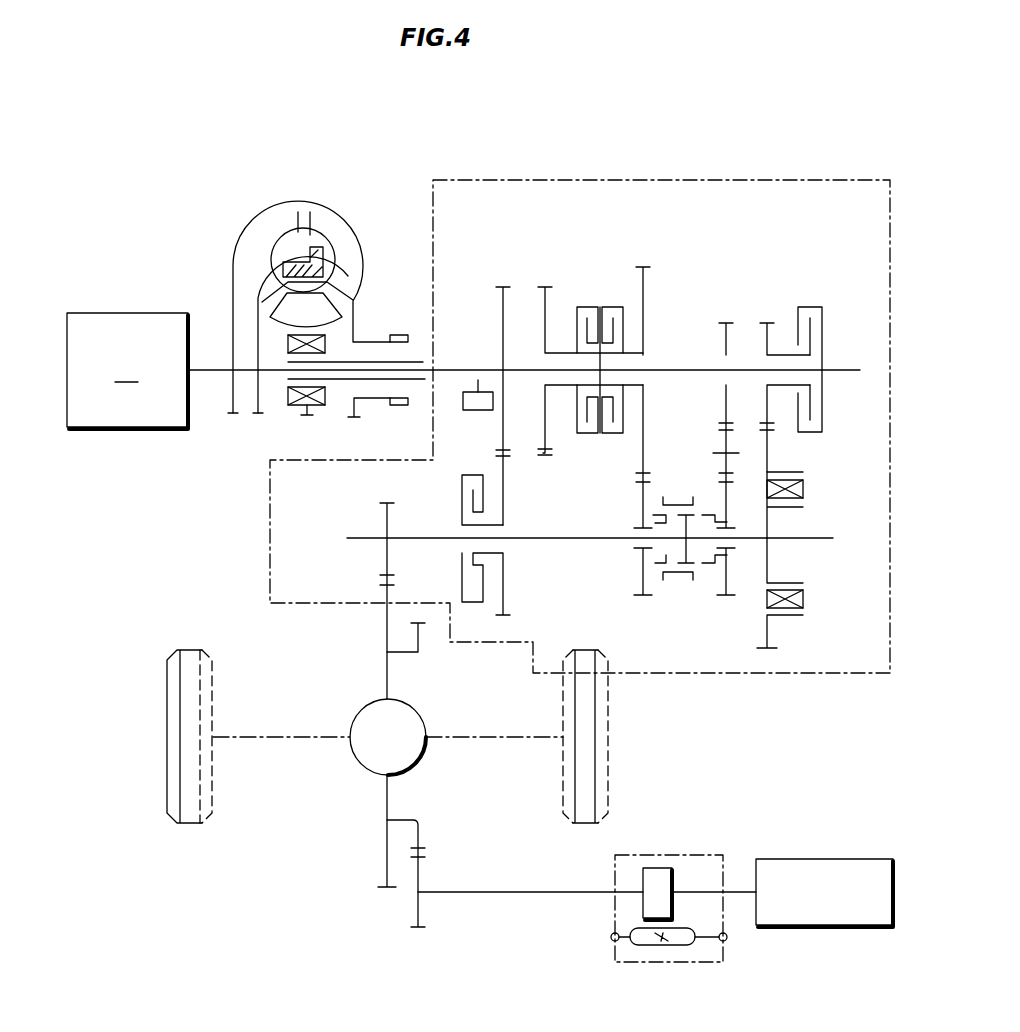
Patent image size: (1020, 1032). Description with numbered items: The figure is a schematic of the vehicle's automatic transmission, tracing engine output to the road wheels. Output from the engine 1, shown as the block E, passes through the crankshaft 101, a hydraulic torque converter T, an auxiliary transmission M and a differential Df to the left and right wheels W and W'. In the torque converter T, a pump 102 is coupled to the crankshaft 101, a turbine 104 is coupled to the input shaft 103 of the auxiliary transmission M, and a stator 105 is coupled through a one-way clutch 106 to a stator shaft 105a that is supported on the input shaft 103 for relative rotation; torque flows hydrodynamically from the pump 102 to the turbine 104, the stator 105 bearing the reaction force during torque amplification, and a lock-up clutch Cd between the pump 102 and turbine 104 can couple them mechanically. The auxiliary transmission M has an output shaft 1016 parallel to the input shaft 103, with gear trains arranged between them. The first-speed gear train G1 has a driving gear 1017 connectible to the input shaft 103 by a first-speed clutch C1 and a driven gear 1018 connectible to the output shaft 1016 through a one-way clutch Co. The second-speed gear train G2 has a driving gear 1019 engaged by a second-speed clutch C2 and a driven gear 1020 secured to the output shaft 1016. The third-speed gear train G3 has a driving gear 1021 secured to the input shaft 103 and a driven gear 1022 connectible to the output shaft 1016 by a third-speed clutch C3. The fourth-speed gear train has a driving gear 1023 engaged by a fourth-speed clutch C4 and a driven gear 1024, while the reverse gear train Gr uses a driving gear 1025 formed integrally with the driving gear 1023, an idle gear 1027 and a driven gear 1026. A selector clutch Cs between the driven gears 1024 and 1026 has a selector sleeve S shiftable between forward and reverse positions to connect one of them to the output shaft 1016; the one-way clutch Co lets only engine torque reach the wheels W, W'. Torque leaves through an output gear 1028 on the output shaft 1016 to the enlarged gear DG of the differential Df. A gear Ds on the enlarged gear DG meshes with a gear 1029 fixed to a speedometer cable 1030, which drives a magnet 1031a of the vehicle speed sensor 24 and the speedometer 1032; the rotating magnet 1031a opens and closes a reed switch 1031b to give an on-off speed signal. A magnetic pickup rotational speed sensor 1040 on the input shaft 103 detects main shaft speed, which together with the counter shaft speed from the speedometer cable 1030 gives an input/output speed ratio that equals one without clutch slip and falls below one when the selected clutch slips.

The engine 1 is at (137, 306).
The engine E is at (126, 370).
The crankshaft 101 is at (212, 373).
The hydraulic torque converter T is at (303, 302).
The pump 102 is at (340, 230).
The turbine 104 is at (278, 228).
The lock-up clutch Cd is at (319, 226).
The stator 105 is at (322, 317).
The one-way clutch 106 is at (258, 330).
The input shaft 103 is at (315, 382).
The stator shaft 105a is at (410, 395).
The auxiliary transmission M is at (675, 180).
The driving gear 1021 is at (503, 340).
The third-speed gear train G3 is at (503, 287).
The driving gear 1019 is at (545, 335).
The second-speed gear train G2 is at (545, 287).
The driven gear 1020 is at (600, 420).
The second-speed clutch C2 is at (582, 305).
The fourth-speed clutch C4 is at (606, 305).
The driving gear 1023 is at (645, 290).
The driven gear 1024 is at (635, 500).
The driving gear 1025 is at (727, 340).
The idle gear 1027 is at (725, 437).
The reverse gear train Gr is at (726, 318).
The driving gear 1017 is at (767, 340).
The first-speed gear train G1 is at (767, 323).
The first-speed clutch C1 is at (822, 305).
The driven gear 1018 is at (790, 462).
The driven gear 1026 is at (760, 510).
The one-way clutch Co is at (805, 603).
The selector sleeve S is at (683, 575).
The selector clutch Cs is at (681, 543).
The rotational speed sensor 1040 is at (478, 432).
The third-speed clutch C3 is at (458, 500).
The driven gear 1022 is at (500, 583).
The output gear 1028 is at (380, 520).
The output shaft 1016 is at (370, 545).
The enlarged gear DG is at (385, 620).
The differential Df is at (428, 760).
The left wheel W is at (206, 761).
The right wheel W' is at (568, 761).
The gear Ds is at (420, 840).
The gear 1029 is at (420, 905).
The speedometer cable 1030 is at (535, 897).
The vehicle speed sensor 24 is at (615, 953).
The magnet 1031a is at (672, 866).
The reed switch 1031b is at (672, 945).
The speedometer 1032 is at (812, 858).